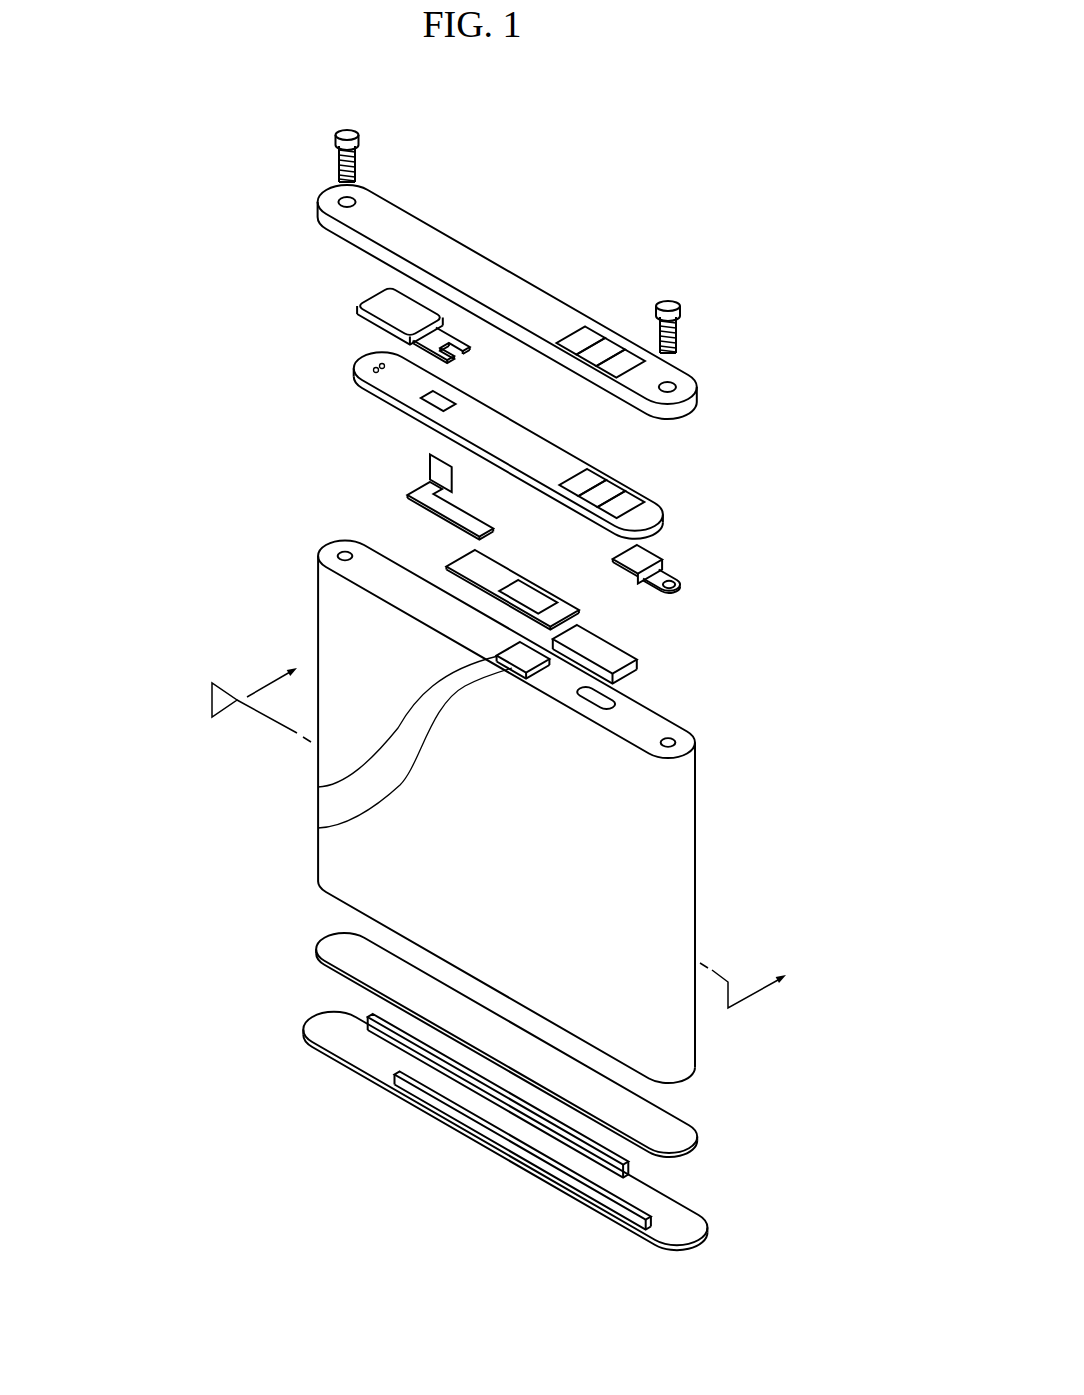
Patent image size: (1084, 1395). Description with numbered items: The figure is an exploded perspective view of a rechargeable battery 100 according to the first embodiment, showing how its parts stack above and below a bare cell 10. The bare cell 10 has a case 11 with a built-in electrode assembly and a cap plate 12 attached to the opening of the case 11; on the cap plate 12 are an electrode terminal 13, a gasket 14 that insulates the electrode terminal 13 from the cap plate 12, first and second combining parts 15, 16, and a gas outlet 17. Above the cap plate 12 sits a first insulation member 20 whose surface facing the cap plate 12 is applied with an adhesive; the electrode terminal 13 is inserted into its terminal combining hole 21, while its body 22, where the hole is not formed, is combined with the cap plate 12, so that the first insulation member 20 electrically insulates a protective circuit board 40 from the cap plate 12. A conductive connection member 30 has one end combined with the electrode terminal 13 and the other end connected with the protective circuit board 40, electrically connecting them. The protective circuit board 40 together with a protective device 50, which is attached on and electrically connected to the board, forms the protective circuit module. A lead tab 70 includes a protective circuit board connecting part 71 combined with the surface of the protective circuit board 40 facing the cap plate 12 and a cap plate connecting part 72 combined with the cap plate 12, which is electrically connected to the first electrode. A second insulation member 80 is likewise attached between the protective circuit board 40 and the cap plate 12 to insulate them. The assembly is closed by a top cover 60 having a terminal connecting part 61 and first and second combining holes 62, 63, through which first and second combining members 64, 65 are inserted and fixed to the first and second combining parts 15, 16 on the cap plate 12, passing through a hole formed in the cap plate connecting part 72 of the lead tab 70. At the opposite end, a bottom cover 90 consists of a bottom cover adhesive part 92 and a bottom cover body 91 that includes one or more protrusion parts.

The rechargeable battery 100 is at (538, 116).
The bare cell 10 is at (512, 792).
The case 11 is at (677, 798).
The cap plate 12 is at (378, 585).
The electrode terminal 13 is at (318, 787).
The gasket 14 is at (318, 828).
The first combining part 15 is at (669, 740).
The second combining part 16 is at (344, 556).
The gas outlet 17 is at (606, 703).
The first insulation member 20 is at (522, 573).
The terminal combining hole 21 is at (522, 597).
The body 22 is at (560, 613).
The conductive connection member 30 is at (394, 468).
The protective circuit board 40 is at (655, 485).
The protective device 50 is at (338, 294).
The top cover 60 is at (491, 296).
The terminal connecting part 61 is at (633, 353).
The first combining hole 62 is at (672, 384).
The second combining hole 63 is at (343, 199).
The first combining member 64 is at (681, 323).
The second combining member 65 is at (360, 164).
The lead tab 70 is at (706, 557).
The protective circuit board connecting part 71 is at (645, 557).
The cap plate connecting part 72 is at (698, 580).
The second insulation member 80 is at (626, 653).
The bottom cover 90 is at (555, 1091).
The bottom cover body 91 is at (767, 1118).
The bottom cover adhesive part 92 is at (682, 1133).